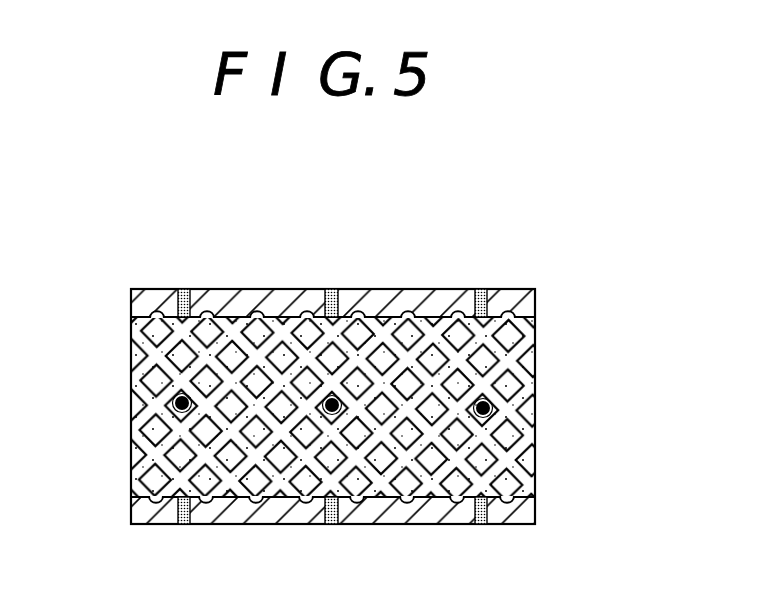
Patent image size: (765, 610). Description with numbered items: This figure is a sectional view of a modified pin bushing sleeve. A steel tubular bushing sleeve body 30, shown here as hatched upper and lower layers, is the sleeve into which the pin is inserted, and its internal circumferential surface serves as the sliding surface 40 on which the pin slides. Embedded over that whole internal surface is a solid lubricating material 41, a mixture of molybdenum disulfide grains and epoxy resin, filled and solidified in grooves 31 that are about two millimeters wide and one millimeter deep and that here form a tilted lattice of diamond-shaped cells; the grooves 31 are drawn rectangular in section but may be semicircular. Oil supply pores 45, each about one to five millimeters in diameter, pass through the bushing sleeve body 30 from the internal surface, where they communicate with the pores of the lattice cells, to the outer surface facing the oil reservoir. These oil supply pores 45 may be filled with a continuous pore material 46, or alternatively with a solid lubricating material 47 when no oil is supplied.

The bushing sleeve body 30 is at (546, 513).
The grooves 31 is at (265, 497).
The sliding surface 40 is at (510, 486).
The solid lubricating material 41 is at (133, 455).
The oil supply pores 45 is at (352, 413).
The continuous pore material 46 is at (326, 400).
The solid lubricating material 47 is at (333, 292).